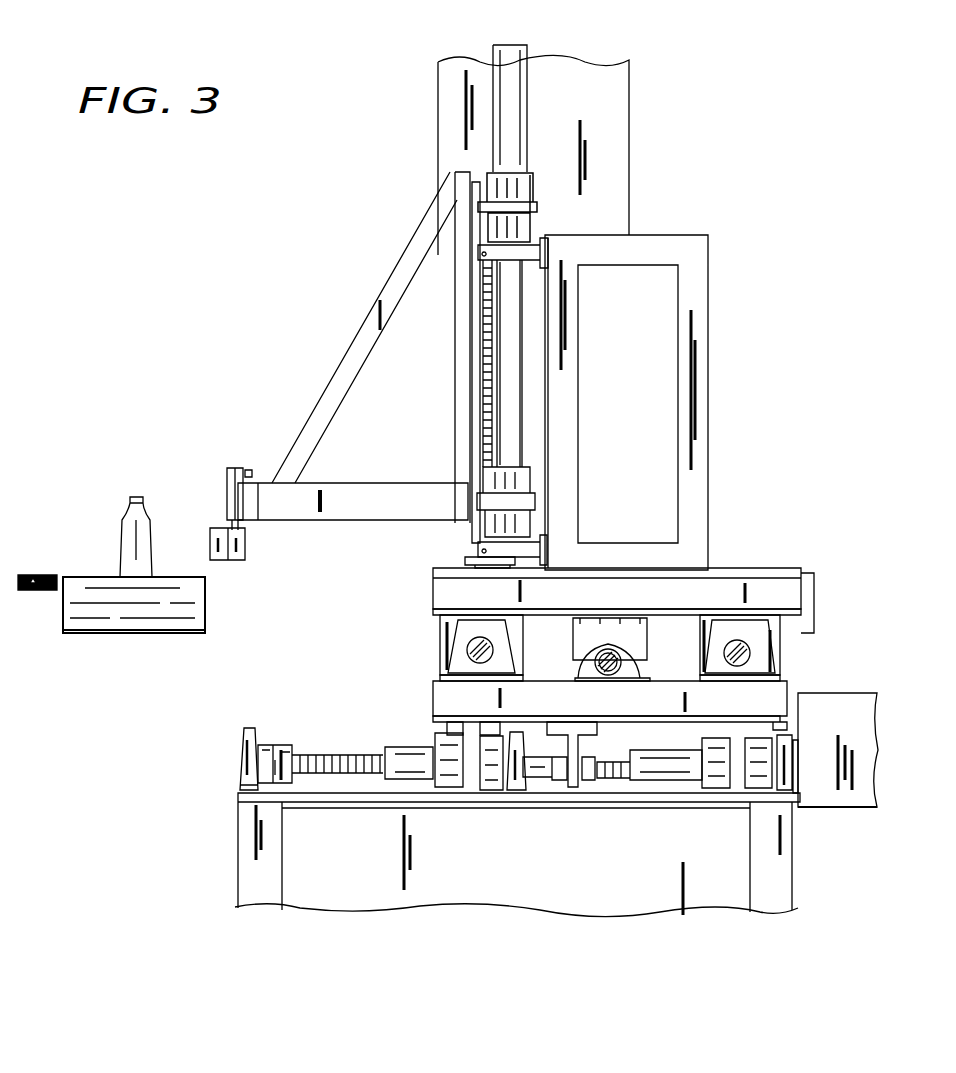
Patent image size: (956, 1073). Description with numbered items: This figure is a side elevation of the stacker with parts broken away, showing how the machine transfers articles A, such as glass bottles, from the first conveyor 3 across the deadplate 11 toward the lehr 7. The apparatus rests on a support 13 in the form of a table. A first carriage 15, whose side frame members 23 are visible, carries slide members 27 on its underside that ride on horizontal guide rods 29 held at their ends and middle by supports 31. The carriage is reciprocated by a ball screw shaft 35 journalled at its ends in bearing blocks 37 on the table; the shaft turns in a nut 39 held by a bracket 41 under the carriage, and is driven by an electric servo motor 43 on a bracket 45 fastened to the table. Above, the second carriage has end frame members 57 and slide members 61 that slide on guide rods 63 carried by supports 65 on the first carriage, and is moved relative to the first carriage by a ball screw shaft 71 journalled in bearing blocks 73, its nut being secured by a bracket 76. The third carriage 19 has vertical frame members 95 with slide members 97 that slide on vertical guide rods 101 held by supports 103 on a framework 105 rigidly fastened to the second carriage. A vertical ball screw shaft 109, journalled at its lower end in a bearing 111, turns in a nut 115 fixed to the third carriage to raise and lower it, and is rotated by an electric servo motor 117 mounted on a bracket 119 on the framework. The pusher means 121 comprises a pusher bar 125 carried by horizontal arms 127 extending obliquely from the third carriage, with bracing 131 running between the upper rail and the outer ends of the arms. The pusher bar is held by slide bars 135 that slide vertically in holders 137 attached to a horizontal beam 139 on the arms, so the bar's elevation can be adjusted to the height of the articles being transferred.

The first conveyor 3 is at (185, 633).
The lehr 7 is at (810, 594).
The deadplate 11 is at (40, 575).
The support 13 is at (238, 870).
The first carriage 15 is at (433, 705).
The third carriage 19 is at (425, 218).
The side frame members 23 is at (440, 690).
The slide members 27 is at (462, 790).
The guide rods 29 is at (685, 780).
The supports 31 is at (250, 728).
The ball screw shaft 35 is at (350, 775).
The bearing blocks 37 is at (285, 745).
The nut 39 is at (578, 785).
The bracket 41 is at (590, 748).
The electric servo motor 43 is at (832, 700).
The bracket 45 is at (820, 808).
The end frame members 57 is at (433, 592).
The slide members 61 is at (443, 628).
The guide rods 63 is at (467, 650).
The supports 65 is at (440, 670).
The ball screw shaft 71 is at (621, 662).
The bearing blocks 73 is at (595, 660).
The bracket 76 is at (640, 630).
The vertical frame members 95 is at (455, 400).
The slide members 97 is at (535, 190).
The vertical guide rods 101 is at (527, 86).
The supports 103 is at (478, 252).
The framework 105 is at (708, 290).
The ball screw shaft 109 is at (483, 350).
The bearing 111 is at (470, 560).
The nut 115 is at (538, 470).
The electric servo motor 117 is at (629, 120).
The bracket 119 is at (472, 258).
The pusher means 121 is at (250, 447).
The pusher bar 125 is at (232, 560).
The horizontal arms 127 is at (373, 462).
The bracing 131 is at (350, 347).
The slide bars 135 is at (240, 470).
The holders 137 is at (227, 495).
The horizontal beam 139 is at (257, 507).
The articles A is at (120, 530).